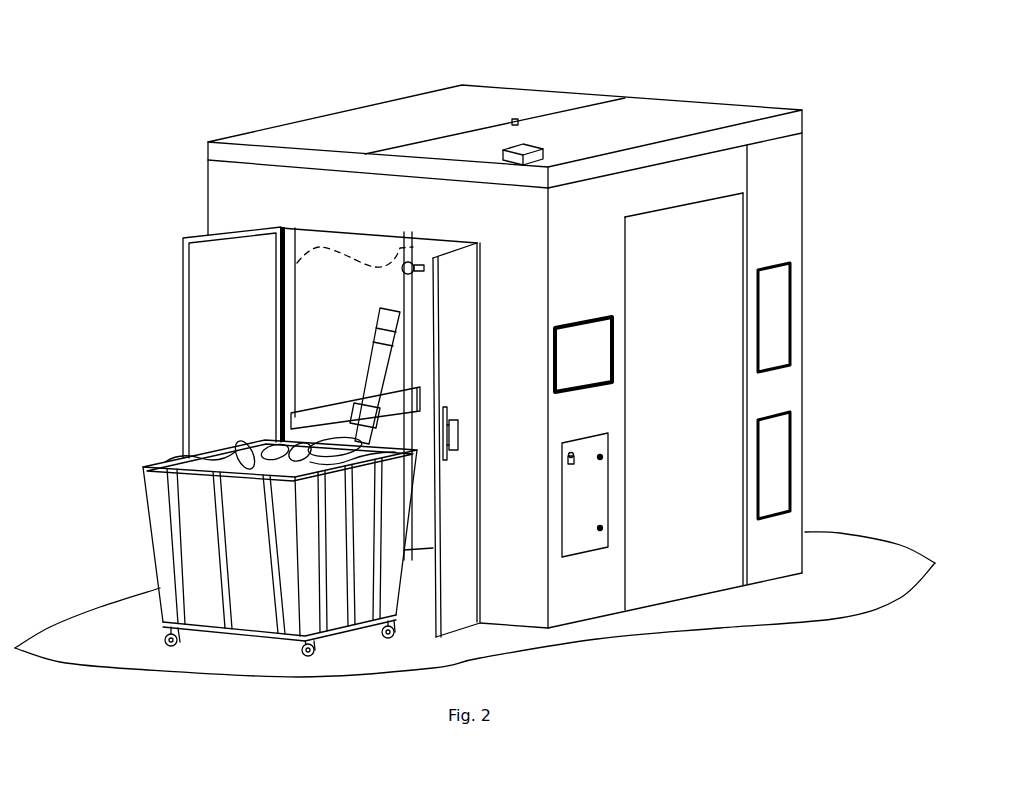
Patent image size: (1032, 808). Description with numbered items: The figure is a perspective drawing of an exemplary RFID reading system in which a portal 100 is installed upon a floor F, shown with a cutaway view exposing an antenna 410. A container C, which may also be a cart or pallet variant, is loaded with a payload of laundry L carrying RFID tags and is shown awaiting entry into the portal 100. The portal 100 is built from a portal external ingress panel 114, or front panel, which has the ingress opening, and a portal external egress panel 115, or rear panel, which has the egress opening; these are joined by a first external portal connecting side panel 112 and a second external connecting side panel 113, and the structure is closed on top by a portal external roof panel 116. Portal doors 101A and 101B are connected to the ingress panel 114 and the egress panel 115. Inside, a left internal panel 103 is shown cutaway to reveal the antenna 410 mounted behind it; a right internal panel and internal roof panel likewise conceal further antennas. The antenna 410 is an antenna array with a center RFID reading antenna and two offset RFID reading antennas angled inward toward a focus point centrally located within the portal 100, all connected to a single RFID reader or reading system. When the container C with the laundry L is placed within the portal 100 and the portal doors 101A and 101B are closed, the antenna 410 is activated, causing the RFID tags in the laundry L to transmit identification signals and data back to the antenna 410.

The portal 100 is at (539, 323).
The portal door 101A is at (196, 320).
The portal door 101B is at (452, 622).
The left internal panel 103 is at (310, 317).
The first external portal connecting side panel 112 is at (204, 235).
The second external connecting side panel 113 is at (778, 157).
The portal external ingress panel 114 is at (282, 185).
The portal external egress panel 115 is at (808, 208).
The portal external roof panel 116 is at (372, 132).
The antenna 410 is at (322, 297).
The container C is at (135, 465).
The laundry L is at (200, 458).
The floor F is at (428, 658).